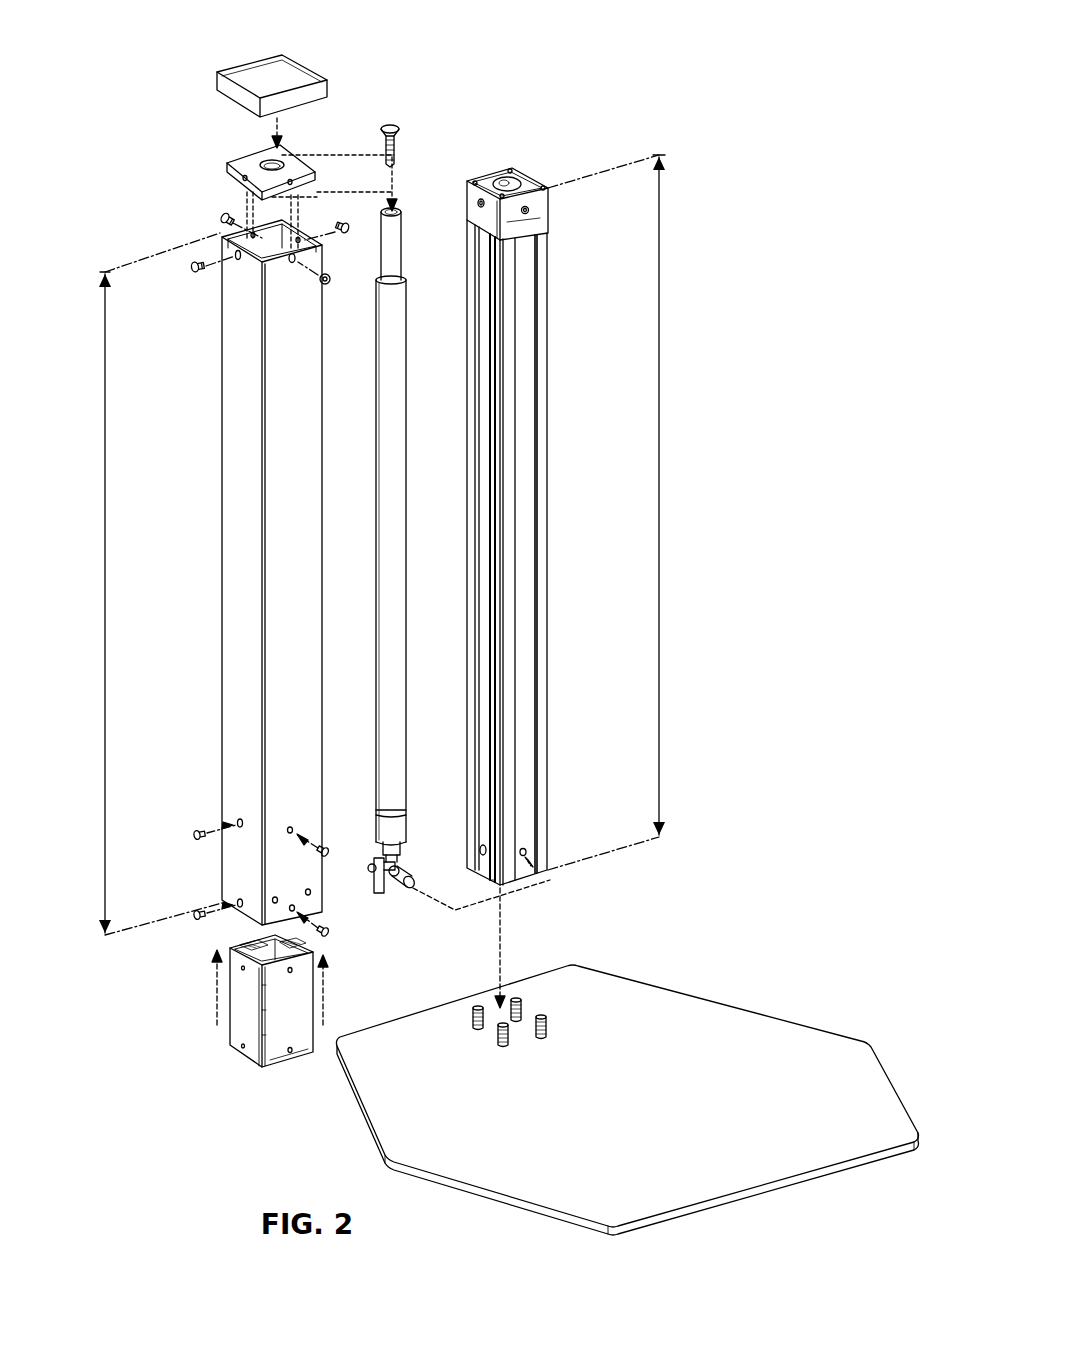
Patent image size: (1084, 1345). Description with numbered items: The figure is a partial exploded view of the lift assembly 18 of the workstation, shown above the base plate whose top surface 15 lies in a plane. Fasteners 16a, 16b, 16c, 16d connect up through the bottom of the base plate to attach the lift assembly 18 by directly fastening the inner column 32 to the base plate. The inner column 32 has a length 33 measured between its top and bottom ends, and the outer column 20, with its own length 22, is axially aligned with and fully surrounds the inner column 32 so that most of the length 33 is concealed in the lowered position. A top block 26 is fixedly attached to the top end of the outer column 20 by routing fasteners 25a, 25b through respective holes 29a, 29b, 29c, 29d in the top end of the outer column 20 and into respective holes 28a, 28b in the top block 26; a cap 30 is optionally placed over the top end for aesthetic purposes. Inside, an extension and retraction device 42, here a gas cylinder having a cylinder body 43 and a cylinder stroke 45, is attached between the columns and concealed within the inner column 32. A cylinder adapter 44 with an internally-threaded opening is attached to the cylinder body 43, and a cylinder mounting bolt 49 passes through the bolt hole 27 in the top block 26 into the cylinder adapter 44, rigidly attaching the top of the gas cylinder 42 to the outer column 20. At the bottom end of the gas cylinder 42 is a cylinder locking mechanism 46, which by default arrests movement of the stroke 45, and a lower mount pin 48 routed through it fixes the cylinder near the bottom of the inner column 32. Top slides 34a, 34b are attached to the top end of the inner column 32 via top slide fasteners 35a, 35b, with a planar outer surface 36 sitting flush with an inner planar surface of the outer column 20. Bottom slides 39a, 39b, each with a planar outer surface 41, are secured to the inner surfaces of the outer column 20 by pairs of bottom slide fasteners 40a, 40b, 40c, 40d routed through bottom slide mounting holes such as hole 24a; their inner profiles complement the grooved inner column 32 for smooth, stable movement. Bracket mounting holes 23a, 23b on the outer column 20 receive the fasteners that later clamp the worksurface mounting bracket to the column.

The top surface 15 is at (736, 1042).
The fastener 16a is at (473, 1021).
The fastener 16b is at (522, 1013).
The fastener 16c is at (547, 1030).
The fastener 16d is at (509, 1041).
The lift assembly 18 is at (684, 263).
The outer column 20 is at (267, 583).
The length 22 is at (108, 536).
The bracket mounting hole 23a is at (273, 903).
The bracket mounting hole 23b is at (310, 894).
The bottom slide mounting hole 24a is at (236, 821).
The fastener 25a is at (237, 262).
The fastener 25b is at (293, 264).
The top block 26 is at (274, 156).
The bolt hole 27 is at (278, 160).
The hole 28a is at (243, 179).
The hole 28b is at (292, 182).
The hole 29a is at (190, 271).
The hole 29b is at (330, 281).
The hole 29c is at (353, 233).
The hole 29d is at (218, 221).
The cap 30 is at (285, 67).
The inner column 32 is at (540, 660).
The length 33 is at (661, 492).
The top slide 34a is at (466, 199).
The top slide 34b is at (543, 218).
The top slide fastener 35a is at (478, 205).
The top slide fastener 35b is at (530, 208).
The planar outer surface 36 is at (515, 229).
The bottom slide 39a is at (241, 1028).
The bottom slide 39b is at (288, 1037).
The bottom slide fastener 40a is at (192, 838).
The bottom slide fastener 40b is at (195, 912).
The bottom slide fastener 40c is at (334, 858).
The bottom slide fastener 40d is at (332, 936).
The planar outer surface 41 is at (246, 998).
The extension and retraction device 42 is at (420, 560).
The cylinder body 43 is at (400, 553).
The cylinder adapter 44 is at (400, 263).
The cylinder stroke 45 is at (400, 828).
The cylinder locking mechanism 46 is at (420, 905).
The lower mount pin 48 is at (398, 861).
The cylinder mounting bolt 49 is at (392, 125).